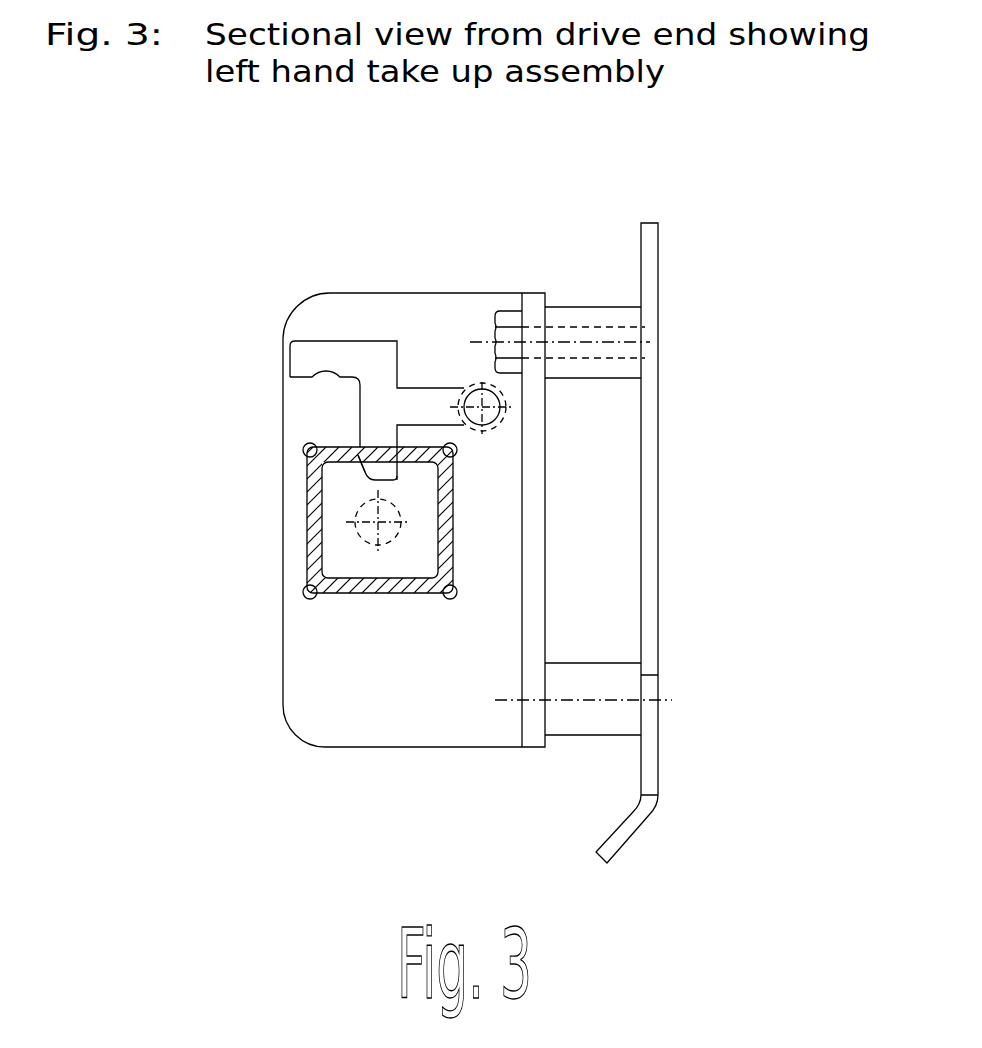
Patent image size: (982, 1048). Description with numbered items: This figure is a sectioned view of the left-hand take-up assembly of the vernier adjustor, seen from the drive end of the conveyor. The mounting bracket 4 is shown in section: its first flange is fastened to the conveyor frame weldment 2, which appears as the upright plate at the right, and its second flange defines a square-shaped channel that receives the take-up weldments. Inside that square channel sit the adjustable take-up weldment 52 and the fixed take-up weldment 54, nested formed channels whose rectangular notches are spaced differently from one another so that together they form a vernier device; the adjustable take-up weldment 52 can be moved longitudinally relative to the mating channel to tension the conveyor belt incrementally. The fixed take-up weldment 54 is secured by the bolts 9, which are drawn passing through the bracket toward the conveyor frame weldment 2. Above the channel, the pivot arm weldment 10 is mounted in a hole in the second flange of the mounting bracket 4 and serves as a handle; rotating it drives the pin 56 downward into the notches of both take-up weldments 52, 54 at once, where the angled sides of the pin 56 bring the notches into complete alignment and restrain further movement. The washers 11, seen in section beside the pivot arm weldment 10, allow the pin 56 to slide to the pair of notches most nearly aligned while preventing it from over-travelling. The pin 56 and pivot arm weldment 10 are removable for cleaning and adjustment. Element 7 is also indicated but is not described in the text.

The conveyor frame weldment 2 is at (658, 248).
The mounting bracket 4 is at (295, 303).
The square tube shaft 7 is at (348, 515).
The bolts for attaching the fixed take-up weldment 9 is at (495, 311).
The pivot arm weldment 10 is at (338, 340).
The washers 11 is at (505, 415).
The adjustable take-up weldment 52 is at (384, 515).
The fixed take-up weldment 54 is at (458, 540).
The pin 56 is at (366, 446).